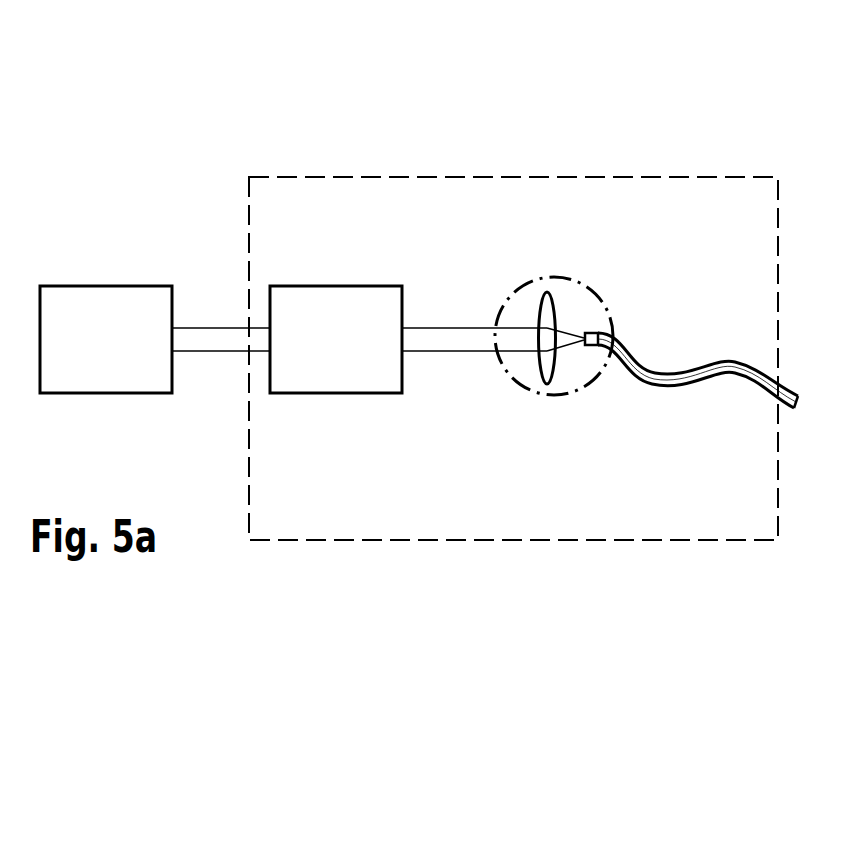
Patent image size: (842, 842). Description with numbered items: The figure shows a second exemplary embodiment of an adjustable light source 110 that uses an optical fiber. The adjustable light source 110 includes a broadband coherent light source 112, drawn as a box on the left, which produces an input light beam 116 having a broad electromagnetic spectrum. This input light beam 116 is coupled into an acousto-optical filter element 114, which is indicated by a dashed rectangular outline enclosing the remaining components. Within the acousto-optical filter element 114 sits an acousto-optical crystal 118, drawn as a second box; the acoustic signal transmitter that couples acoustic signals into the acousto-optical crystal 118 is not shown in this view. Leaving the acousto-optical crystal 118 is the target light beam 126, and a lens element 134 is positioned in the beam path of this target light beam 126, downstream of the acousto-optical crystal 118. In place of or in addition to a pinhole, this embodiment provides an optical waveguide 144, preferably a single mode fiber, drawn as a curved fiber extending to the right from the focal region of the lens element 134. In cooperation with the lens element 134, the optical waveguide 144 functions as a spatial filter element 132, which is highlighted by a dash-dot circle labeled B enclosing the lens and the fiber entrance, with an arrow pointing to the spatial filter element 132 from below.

The adjustable light source 110 is at (162, 122).
The broadband coherent light source 112 is at (128, 355).
The acousto-optical filter element 114 is at (656, 177).
The input light beam 116 is at (213, 353).
The acousto-optical crystal 118 is at (358, 355).
The target light beam 126 is at (455, 353).
The spatial filter element 132 is at (518, 440).
The lens element 134 is at (543, 300).
The optical waveguide 144 is at (722, 378).
The detail region B is at (603, 290).